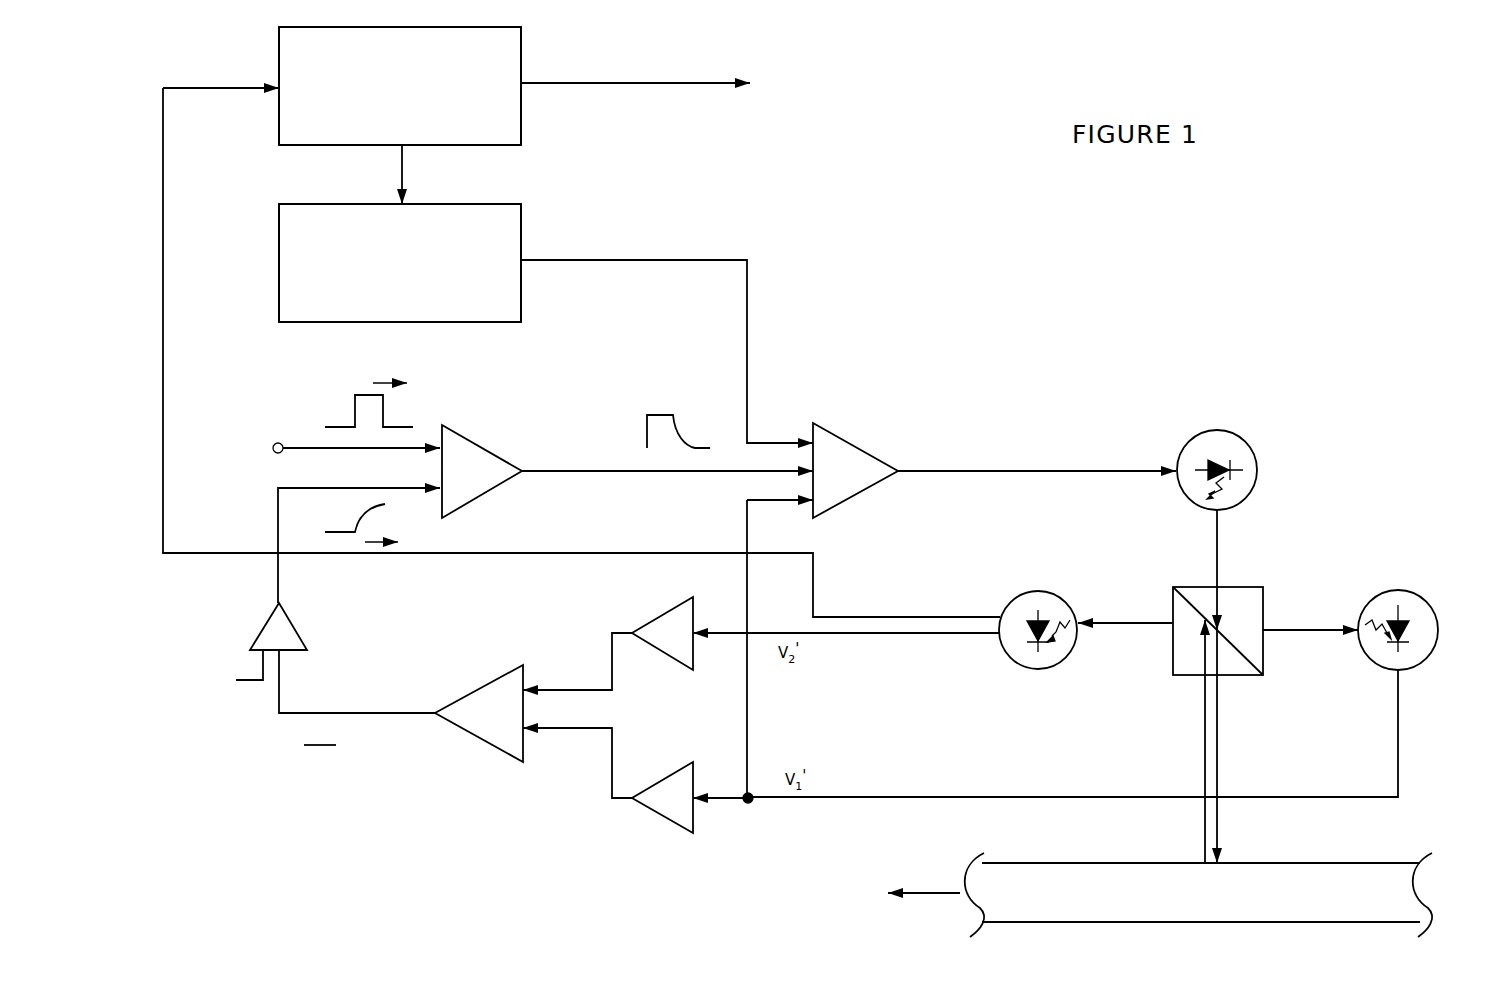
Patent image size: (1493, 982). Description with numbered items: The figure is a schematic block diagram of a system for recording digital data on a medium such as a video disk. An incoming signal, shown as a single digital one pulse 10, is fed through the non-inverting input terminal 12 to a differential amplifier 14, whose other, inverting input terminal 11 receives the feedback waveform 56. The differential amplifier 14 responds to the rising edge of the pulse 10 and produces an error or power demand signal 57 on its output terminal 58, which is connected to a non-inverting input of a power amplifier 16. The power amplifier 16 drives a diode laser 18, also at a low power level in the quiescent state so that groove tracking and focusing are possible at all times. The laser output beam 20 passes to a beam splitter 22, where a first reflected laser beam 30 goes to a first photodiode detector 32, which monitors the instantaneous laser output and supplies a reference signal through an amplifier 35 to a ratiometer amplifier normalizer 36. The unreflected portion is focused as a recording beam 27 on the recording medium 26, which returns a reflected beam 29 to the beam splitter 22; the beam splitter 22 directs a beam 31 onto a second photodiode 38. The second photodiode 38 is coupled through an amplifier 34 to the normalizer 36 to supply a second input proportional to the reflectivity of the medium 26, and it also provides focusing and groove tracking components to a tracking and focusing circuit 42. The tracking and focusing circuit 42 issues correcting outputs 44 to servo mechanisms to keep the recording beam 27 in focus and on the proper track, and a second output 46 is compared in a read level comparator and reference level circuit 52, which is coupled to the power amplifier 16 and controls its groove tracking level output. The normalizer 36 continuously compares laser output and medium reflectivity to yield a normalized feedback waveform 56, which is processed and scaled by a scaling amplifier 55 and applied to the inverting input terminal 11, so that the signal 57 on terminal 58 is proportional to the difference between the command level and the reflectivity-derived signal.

The signal input pulse 10 is at (366, 396).
The inverting input terminal 11 is at (370, 487).
The input terminal 12 is at (281, 441).
The differential amplifier 14 is at (448, 428).
The power amplifier 16 is at (818, 426).
The diode laser 18 is at (1257, 462).
The laser beam 20 is at (1219, 520).
The beam splitter 22 is at (1173, 659).
The recording medium 26 is at (1268, 862).
The recording beam 27 is at (1218, 696).
The reflected beam 29 is at (1204, 696).
The first reflected laser beam 30 is at (1282, 630).
The beam to second photodiode 31 is at (1142, 622).
The first photodiode detector 32 is at (1437, 632).
The amplifier 34 is at (665, 617).
The amplifier 35 is at (667, 778).
The ratiometer amplifier normalizer 36 is at (462, 730).
The second photodiode 38 is at (1008, 657).
The tracking and focusing circuit 42 is at (279, 134).
The correcting outputs 44 is at (598, 83).
The second output 46 is at (402, 172).
The read level comparator and reference level circuit 52 is at (521, 240).
The scaling amplifier 55 is at (266, 626).
The feedback waveform 56 is at (370, 512).
The error signal 57 is at (577, 473).
The output terminal 58 is at (522, 474).